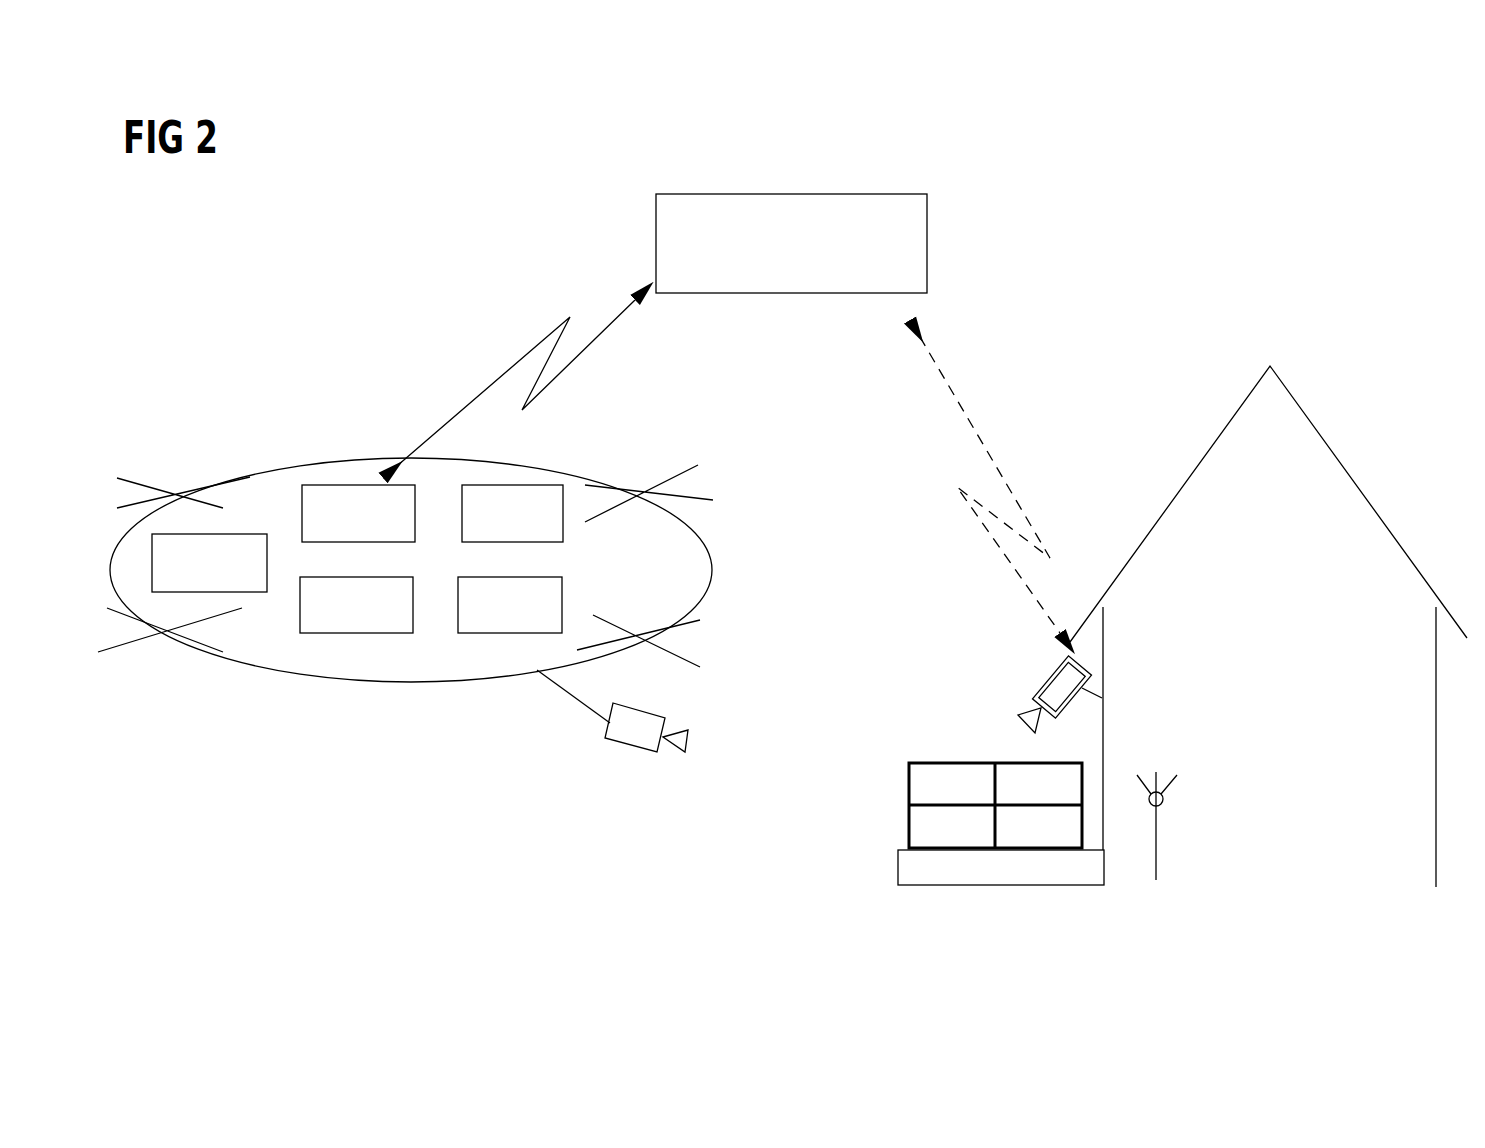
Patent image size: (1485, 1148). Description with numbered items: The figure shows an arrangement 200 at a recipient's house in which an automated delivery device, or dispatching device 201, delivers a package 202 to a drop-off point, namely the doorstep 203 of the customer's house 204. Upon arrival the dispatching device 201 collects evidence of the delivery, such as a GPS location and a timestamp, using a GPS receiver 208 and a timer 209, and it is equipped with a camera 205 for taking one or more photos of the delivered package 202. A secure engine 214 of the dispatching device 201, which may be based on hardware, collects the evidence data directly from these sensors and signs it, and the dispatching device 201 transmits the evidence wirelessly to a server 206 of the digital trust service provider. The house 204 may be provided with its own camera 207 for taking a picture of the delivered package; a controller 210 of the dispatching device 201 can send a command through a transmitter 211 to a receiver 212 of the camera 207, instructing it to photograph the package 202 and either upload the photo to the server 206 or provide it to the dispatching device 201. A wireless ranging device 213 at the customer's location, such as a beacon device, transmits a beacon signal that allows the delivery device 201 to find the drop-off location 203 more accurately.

The arrangement 200 is at (1320, 175).
The automated delivery device 201 is at (698, 532).
The package 202 is at (930, 762).
The doorstep 203 is at (903, 848).
The customer's house 204 is at (1340, 463).
The camera 205 is at (628, 745).
The server 206 is at (913, 193).
The camera 207 is at (1043, 685).
The GPS unit 208 is at (505, 485).
The timer 209 is at (490, 633).
The controller 210 is at (258, 534).
The transmitter 211 is at (330, 485).
The receiver 212 is at (1085, 672).
The wireless ranging device 213 is at (1156, 840).
The secure engine 214 is at (337, 633).